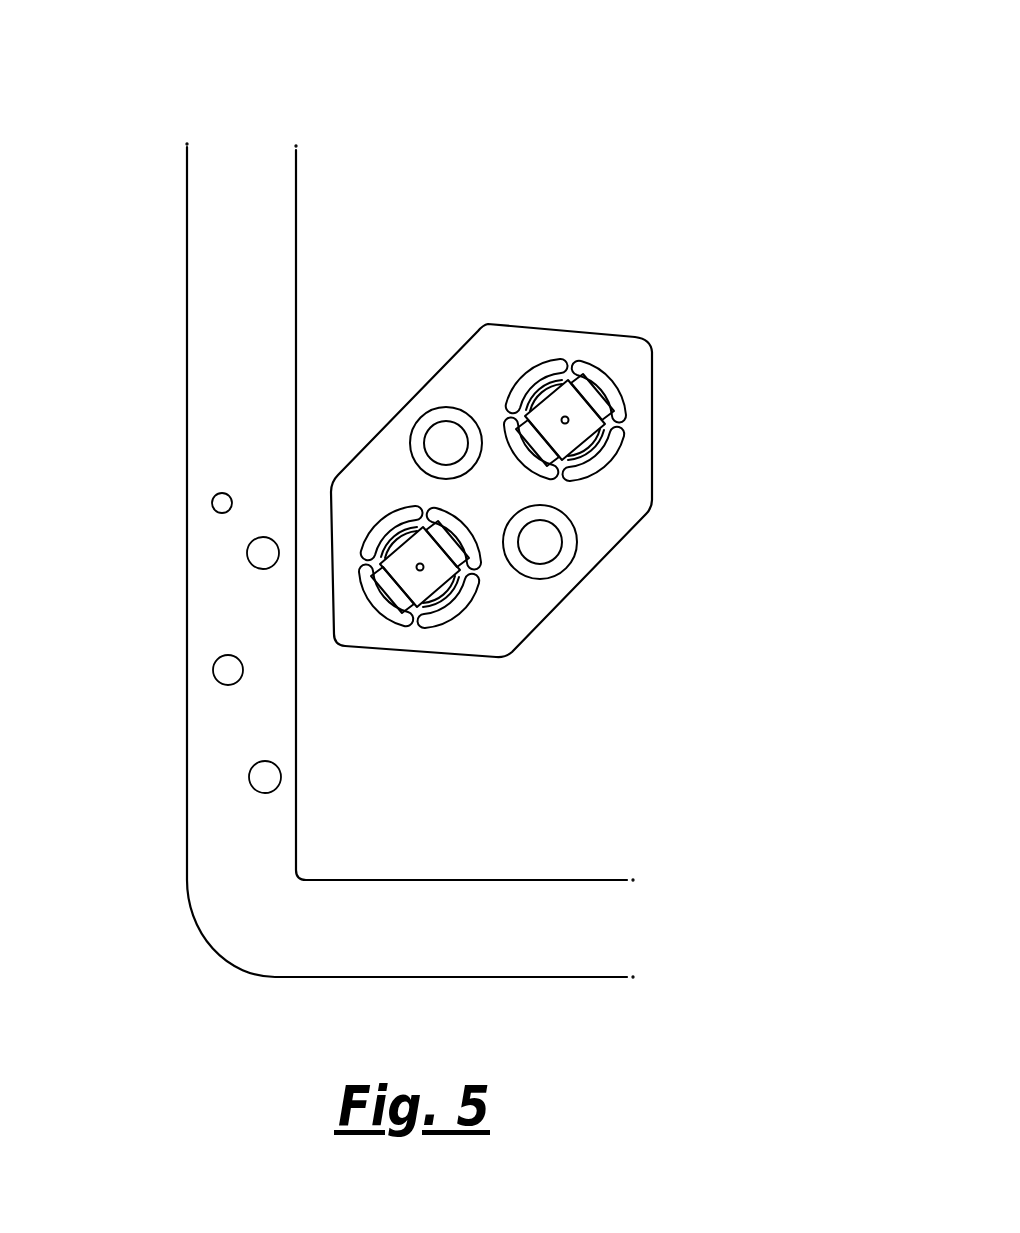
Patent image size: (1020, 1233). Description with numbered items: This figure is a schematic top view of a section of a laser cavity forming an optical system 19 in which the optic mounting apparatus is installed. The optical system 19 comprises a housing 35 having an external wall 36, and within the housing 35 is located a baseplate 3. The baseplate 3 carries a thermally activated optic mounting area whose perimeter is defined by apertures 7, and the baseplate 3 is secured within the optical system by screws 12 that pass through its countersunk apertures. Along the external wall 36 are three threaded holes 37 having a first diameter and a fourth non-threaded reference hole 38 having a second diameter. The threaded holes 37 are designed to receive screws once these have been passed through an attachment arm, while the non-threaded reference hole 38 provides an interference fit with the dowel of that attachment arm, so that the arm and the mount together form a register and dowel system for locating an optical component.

The baseplate 3 is at (657, 438).
The apertures 7 is at (610, 377).
The screws 12 is at (438, 435).
The optical system 19 is at (606, 106).
The housing 35 is at (334, 219).
The external wall 36 is at (210, 280).
The threaded holes 37 is at (246, 556).
The non-threaded reference hole 38 is at (212, 505).